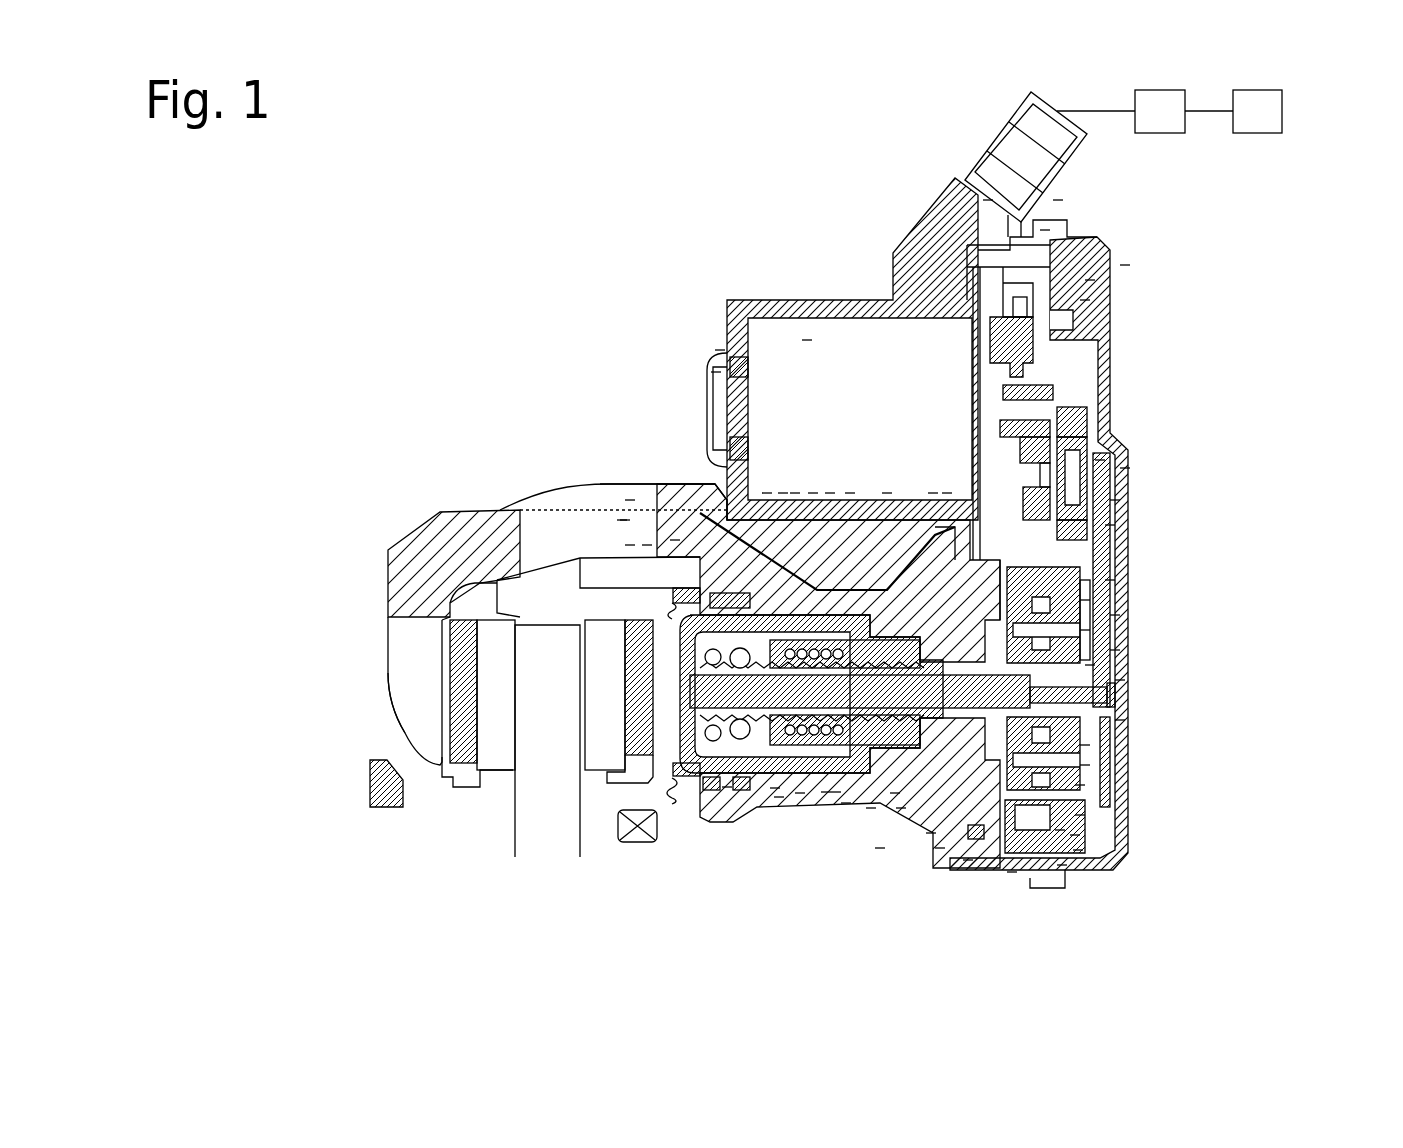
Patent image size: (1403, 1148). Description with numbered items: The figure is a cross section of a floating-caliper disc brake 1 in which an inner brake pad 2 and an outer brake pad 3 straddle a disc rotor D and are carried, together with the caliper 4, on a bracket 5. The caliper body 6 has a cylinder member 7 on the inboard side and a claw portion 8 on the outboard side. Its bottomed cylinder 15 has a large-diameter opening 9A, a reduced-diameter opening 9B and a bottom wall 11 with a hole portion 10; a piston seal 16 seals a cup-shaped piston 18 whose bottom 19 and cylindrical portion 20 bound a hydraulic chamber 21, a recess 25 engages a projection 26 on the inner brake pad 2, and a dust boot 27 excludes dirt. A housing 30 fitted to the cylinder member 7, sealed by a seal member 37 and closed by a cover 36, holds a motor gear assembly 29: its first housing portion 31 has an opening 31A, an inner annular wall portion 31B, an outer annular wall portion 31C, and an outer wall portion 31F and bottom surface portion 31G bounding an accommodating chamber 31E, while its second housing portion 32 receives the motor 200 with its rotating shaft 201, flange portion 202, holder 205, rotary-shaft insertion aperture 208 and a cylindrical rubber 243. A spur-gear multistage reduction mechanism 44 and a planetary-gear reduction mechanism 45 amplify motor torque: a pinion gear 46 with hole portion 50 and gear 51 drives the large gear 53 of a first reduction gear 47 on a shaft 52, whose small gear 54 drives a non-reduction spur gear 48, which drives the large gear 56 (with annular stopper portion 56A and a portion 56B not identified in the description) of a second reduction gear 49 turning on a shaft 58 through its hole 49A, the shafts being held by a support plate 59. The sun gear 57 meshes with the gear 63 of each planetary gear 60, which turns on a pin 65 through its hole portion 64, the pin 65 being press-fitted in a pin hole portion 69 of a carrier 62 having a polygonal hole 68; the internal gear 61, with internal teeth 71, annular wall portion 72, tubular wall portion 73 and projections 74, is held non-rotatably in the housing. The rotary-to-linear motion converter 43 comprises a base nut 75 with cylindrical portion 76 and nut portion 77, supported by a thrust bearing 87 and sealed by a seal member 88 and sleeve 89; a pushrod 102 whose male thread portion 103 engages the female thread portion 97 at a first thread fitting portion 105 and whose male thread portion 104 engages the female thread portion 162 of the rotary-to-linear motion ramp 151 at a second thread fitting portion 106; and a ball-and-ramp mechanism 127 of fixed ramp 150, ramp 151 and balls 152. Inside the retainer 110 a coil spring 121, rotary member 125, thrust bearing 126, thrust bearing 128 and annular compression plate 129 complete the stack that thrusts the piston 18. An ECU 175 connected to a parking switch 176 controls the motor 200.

The disc brake 1 is at (410, 370).
The inner brake pad 2 is at (604, 772).
The outer brake pad 3 is at (505, 778).
The caliper 4 is at (412, 515).
The bracket 5 is at (378, 808).
The caliper body 6 is at (553, 535).
The cylinder member 7 is at (622, 520).
The claw portion 8 is at (413, 697).
The large-diameter opening 9A is at (756, 763).
The reduced-diameter opening 9B is at (871, 808).
The hole portion 10 is at (931, 833).
The bottom wall 11 is at (968, 860).
The cylinder 15 is at (800, 808).
The piston seal 16 is at (750, 757).
The piston 18 is at (780, 752).
The bottom 19 is at (625, 520).
The cylindrical portion 20 is at (797, 300).
The hydraulic chamber 21 is at (836, 792).
The recess 25 is at (679, 767).
The projection 26 is at (610, 800).
The dust boot 27 is at (667, 777).
The motor gear assembly 29 is at (1090, 352).
The housing 30 is at (1012, 872).
The first housing portion 31 is at (1045, 882).
The opening 31A is at (1000, 872).
The inner annular wall portion 31B is at (1110, 525).
The outer annular wall portion 31C is at (1062, 865).
The accommodating chamber 31E is at (1090, 280).
The outer wall portion 31F is at (1058, 200).
The bottom surface portion 31G is at (947, 493).
The second housing portion 32 is at (783, 493).
The cover 36 is at (1125, 265).
The seal member 37 is at (940, 848).
The rotary-to-linear motion converter 43 is at (813, 493).
The spur-gear multistage reduction mechanism 44 is at (1125, 468).
The planetary-gear reduction mechanism 45 is at (1075, 835).
The pinion gear 46 is at (1040, 335).
The first reduction gear 47 is at (1045, 475).
The non-reduction spur gear 48 is at (1085, 420).
The second reduction gear 49 is at (1085, 620).
The hole 49A is at (1120, 680).
The hole portion 50 is at (1060, 380).
The gear 51 is at (1075, 362).
The shaft 52 is at (1105, 485).
The large gear 53 is at (1090, 382).
The small gear 54 is at (1115, 500).
The large gear 56 is at (1110, 555).
The annular stopper portion 56A is at (1110, 580).
The planetary gear bore 56B is at (1115, 615).
The sun gear 57 is at (1115, 650).
The shaft 58 is at (1110, 695).
The support plate 59 is at (1100, 460).
The planetary gear 60 is at (1080, 785).
The internal gear 61 is at (1060, 830).
The carrier 62 is at (1080, 715).
The gear 63 is at (1120, 720).
The hole portion 64 is at (1085, 745).
The pin 65 is at (1085, 765).
The polygonal hole 68 is at (1090, 665).
The pin hole portion 69 is at (1085, 630).
The internal teeth 71 is at (1080, 815).
The annular wall portion 72 is at (1075, 800).
The tubular wall portion 73 is at (1085, 600).
The projections 74 is at (1078, 850).
The base nut 75 is at (880, 848).
The cylindrical portion 76 is at (901, 808).
The nut portion 77 is at (826, 792).
The thrust bearing 87 is at (895, 793).
The seal member 88 is at (887, 493).
The sleeve 89 is at (933, 493).
The female thread portion 97 is at (807, 340).
The pushrod 102 is at (850, 493).
The male thread portion 103 is at (830, 493).
The male thread portion 104 is at (630, 545).
The first thread fitting portion 105 is at (767, 493).
The second thread fitting portion 106 is at (647, 545).
The retainer 110 is at (800, 793).
The coil spring 121 is at (846, 803).
The rotary member 125 is at (779, 797).
The thrust bearing 126 is at (745, 360).
The ball-and-ramp mechanism 127 is at (716, 372).
The thrust bearing 128 is at (706, 793).
The annular compression plate 129 is at (630, 500).
The fixed ramp 150 is at (775, 788).
The rotary-to-linear motion ramp 151 is at (727, 787).
The balls 152 is at (708, 440).
The female thread portion 162 is at (675, 540).
The ECU 175 is at (1185, 120).
The parking switch 176 is at (1283, 111).
The motor 200 is at (795, 493).
The rotating shaft 201 is at (988, 200).
The flange portion 202 is at (1003, 165).
The holder 205 is at (1045, 230).
The rotary-shaft insertion aperture 208 is at (1085, 300).
The cylindrical rubber 243 is at (720, 350).
The disc rotor D is at (556, 838).